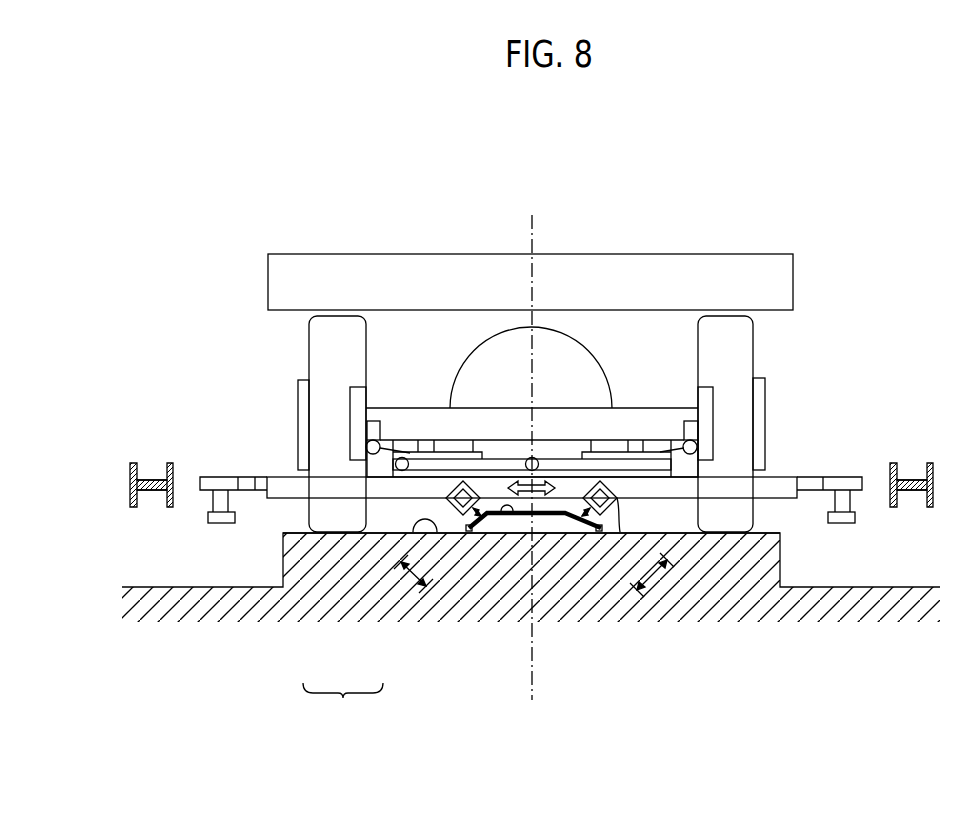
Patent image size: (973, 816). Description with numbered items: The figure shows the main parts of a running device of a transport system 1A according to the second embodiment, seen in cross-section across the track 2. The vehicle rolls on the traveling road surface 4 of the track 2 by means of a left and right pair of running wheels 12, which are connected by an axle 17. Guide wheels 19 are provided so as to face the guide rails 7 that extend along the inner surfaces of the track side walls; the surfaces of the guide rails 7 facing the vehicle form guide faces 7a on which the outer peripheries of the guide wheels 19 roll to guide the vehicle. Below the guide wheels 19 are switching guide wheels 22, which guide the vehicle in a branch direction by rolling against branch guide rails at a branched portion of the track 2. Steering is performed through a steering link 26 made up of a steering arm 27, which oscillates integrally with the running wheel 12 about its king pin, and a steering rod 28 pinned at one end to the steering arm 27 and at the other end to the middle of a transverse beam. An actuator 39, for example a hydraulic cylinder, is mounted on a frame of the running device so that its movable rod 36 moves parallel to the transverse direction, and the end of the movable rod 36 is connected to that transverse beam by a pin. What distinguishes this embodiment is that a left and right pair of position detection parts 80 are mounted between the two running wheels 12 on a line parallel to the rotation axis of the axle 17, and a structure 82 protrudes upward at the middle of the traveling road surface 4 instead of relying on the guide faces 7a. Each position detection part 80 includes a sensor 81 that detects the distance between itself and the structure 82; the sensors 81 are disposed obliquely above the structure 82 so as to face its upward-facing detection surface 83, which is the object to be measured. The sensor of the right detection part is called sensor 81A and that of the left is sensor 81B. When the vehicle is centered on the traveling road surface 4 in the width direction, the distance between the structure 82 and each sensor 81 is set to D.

The transport system 1A is at (720, 237).
The track 2 is at (848, 603).
The traveling road surface 4 is at (447, 500).
The guide rail 7 is at (130, 470).
The guide face 7a is at (184, 466).
The running wheel 12 is at (327, 355).
The axle 17 is at (500, 420).
The guide wheel 19 is at (200, 480).
The switching guide wheel 22 is at (230, 518).
The steering link 26 is at (343, 705).
The steering arm 27 is at (372, 432).
The steering rod 28 is at (388, 453).
The movable rod 36 is at (515, 533).
The actuator 39 is at (638, 465).
The position detection part 80 is at (545, 605).
The sensor 81 is at (544, 605).
The sensor 81A is at (463, 515).
The sensor 81B is at (600, 515).
The structure 82 is at (558, 518).
The detection surface 83 is at (497, 516).
The distance D is at (536, 612).